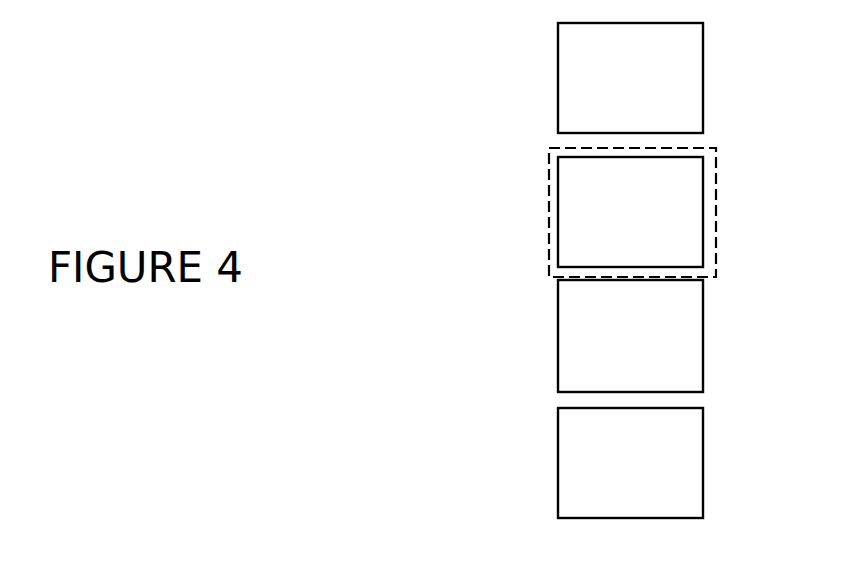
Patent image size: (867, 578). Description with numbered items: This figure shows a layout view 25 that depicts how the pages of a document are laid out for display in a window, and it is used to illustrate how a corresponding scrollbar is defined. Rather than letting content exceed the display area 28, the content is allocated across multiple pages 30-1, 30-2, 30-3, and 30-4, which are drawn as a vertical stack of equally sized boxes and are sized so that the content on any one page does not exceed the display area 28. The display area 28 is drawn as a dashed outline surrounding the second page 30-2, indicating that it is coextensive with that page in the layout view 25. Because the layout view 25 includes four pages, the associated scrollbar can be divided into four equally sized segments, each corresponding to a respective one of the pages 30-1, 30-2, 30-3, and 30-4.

The layout view 25 is at (567, 270).
The display area 28 is at (685, 212).
The page 30-1 is at (697, 64).
The page 30-2 is at (697, 198).
The page 30-3 is at (688, 326).
The page 30-4 is at (698, 452).